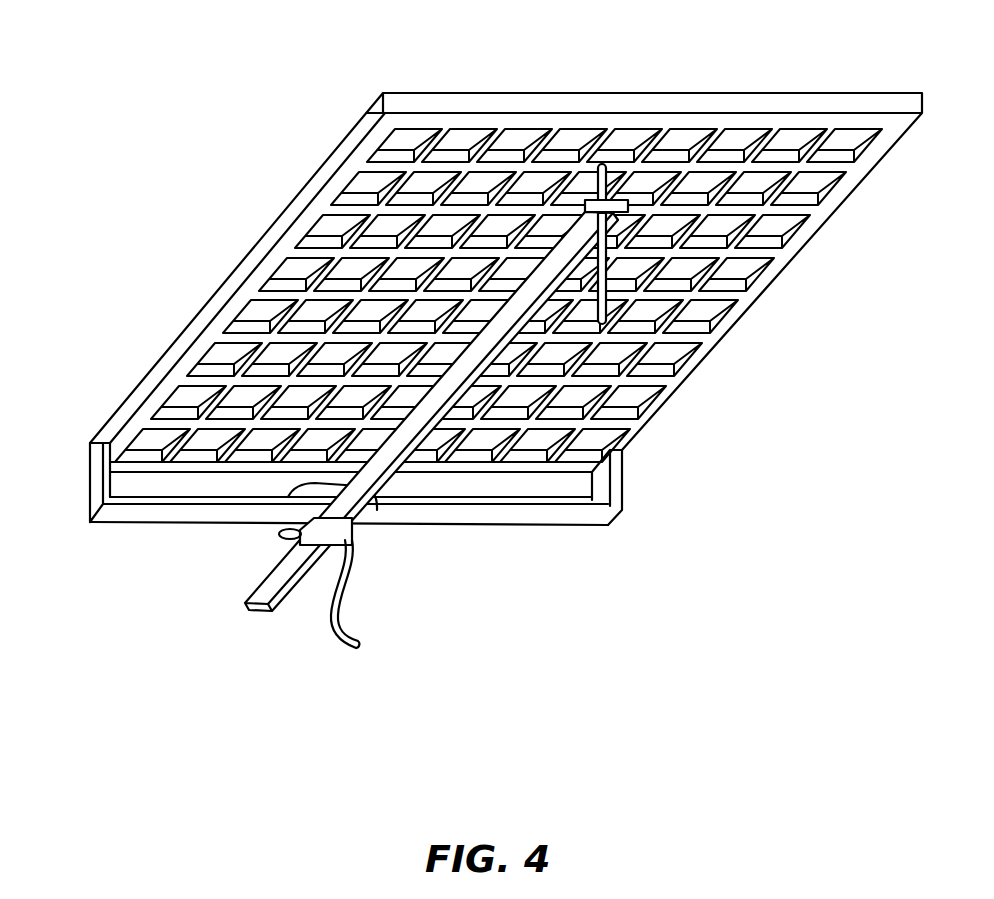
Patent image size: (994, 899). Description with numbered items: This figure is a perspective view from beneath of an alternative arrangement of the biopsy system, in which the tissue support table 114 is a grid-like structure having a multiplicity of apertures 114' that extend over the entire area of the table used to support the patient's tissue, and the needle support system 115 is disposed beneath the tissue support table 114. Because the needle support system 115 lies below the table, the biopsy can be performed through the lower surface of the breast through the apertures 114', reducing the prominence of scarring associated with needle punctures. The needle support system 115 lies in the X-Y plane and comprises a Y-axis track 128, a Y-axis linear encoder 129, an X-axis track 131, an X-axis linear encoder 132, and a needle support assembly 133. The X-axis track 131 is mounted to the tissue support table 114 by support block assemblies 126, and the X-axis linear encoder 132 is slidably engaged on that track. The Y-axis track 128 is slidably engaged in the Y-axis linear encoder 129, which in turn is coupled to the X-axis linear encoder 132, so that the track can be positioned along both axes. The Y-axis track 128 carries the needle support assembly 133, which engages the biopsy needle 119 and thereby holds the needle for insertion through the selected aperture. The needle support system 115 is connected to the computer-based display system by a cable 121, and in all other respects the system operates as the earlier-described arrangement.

The tissue support table 114 is at (506, 282).
The apertures 114' is at (498, 243).
The needle support system 115 is at (183, 666).
The biopsy needle 119 is at (606, 252).
The cable 121 is at (344, 650).
The support block assemblies 126 is at (625, 460).
The Y-axis track 128 is at (282, 610).
The Y-axis linear encoder 129 is at (283, 535).
The X-axis track 131 is at (565, 517).
The X-axis linear encoder 132 is at (368, 530).
The needle support assembly 133 is at (608, 165).